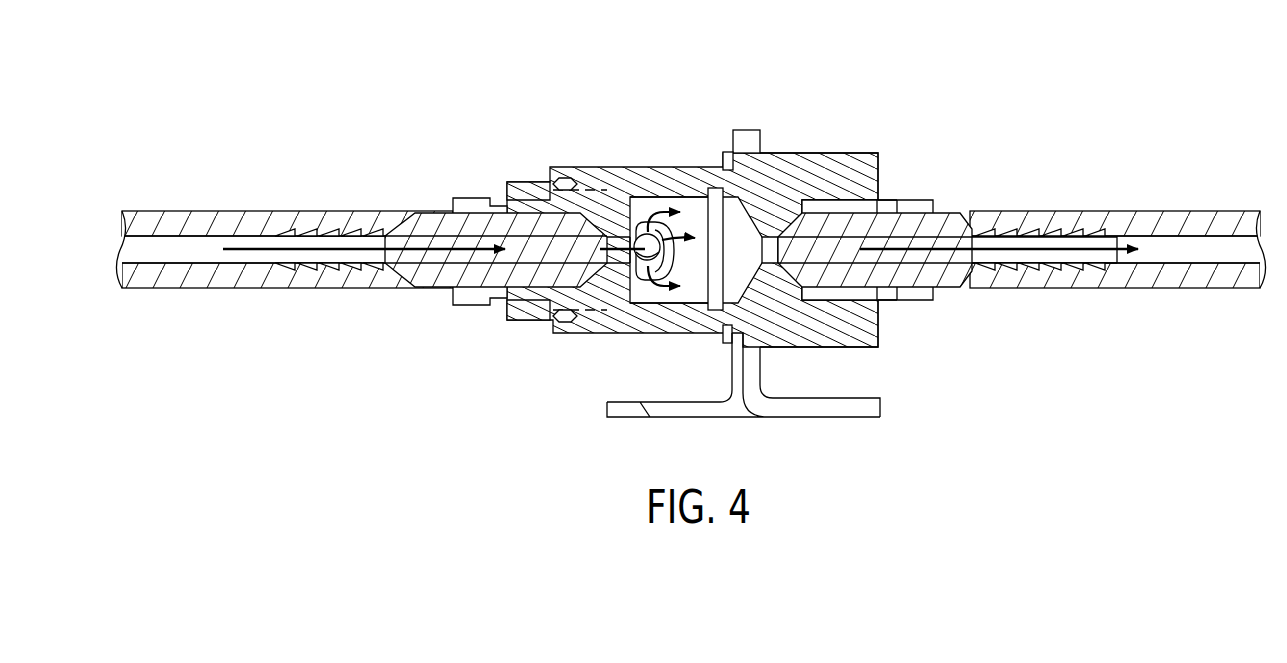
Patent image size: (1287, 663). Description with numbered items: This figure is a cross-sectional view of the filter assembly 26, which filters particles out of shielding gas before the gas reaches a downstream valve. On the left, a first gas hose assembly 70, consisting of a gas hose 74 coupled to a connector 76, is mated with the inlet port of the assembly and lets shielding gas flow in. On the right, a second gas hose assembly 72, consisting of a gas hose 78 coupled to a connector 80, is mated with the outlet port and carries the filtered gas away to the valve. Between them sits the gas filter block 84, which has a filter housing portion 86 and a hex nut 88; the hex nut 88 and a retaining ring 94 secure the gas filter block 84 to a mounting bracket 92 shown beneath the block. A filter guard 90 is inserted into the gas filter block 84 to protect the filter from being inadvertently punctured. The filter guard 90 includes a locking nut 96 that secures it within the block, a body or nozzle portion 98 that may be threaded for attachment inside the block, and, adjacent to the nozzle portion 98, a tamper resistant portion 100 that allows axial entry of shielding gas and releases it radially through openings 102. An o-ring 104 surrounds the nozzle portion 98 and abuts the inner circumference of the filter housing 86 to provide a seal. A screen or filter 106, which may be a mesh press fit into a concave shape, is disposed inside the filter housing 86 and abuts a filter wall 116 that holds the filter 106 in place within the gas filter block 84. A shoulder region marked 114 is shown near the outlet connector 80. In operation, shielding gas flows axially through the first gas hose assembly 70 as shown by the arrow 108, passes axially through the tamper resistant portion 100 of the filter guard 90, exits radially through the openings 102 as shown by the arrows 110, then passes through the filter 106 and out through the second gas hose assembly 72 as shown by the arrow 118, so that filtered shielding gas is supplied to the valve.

The filter assembly 26 is at (968, 104).
The first gas hose assembly 70 is at (322, 150).
The second gas hose assembly 72 is at (1152, 178).
The gas hose 74 is at (272, 210).
The connector 76 is at (470, 197).
The gas hose 78 is at (1198, 210).
The connector 80 is at (912, 200).
The gas filter block 84 is at (705, 68).
The filter housing portion 86 is at (652, 176).
The hex nut 88 is at (838, 168).
The filter guard 90 is at (528, 132).
The mounting bracket 92 is at (754, 373).
The retaining ring 94 is at (723, 150).
The locking nut 96 is at (520, 320).
The nozzle portion 98 is at (603, 212).
The tamper resistant portion 100 is at (674, 264).
The openings 102 is at (646, 264).
The o-ring 104 is at (550, 310).
The filter 106 is at (724, 196).
The arrow 108 is at (350, 252).
The arrows 110 is at (680, 236).
The shoulder 114 is at (890, 200).
The filter wall 116 is at (746, 266).
The arrow 118 is at (1002, 258).